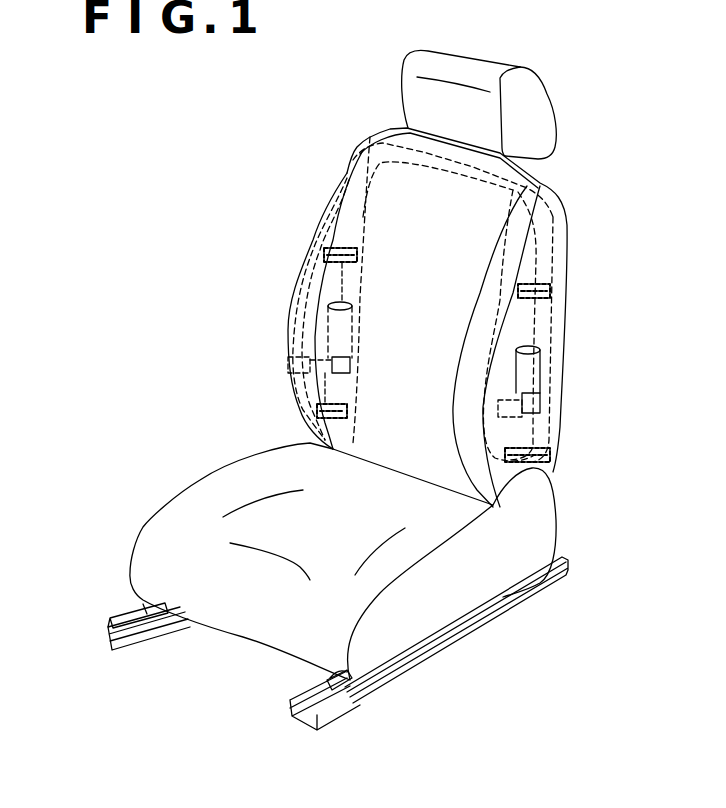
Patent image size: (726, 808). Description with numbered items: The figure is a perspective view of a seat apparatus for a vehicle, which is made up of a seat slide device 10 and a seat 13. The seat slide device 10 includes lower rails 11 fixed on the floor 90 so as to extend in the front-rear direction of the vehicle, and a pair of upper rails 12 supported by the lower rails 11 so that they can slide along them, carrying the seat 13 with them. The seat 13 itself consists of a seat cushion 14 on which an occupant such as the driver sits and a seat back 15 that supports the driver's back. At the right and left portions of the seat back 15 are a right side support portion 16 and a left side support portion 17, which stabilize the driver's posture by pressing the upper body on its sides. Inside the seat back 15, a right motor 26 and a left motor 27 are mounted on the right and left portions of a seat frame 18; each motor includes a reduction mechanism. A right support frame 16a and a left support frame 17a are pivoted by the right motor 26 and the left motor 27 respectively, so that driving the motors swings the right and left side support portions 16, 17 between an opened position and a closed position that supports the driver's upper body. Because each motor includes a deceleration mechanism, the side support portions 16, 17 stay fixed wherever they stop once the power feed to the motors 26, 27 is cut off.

The seat slide device 10 is at (137, 666).
The lower rails 11 is at (107, 633).
The upper rails 12 is at (167, 617).
The seat 13 is at (141, 337).
The seat cushion 14 is at (237, 500).
The seat back 15 is at (403, 215).
The right side support portion 16 is at (297, 287).
The right support frame 16a is at (290, 385).
The left side support portion 17 is at (470, 345).
The left support frame 17a is at (487, 434).
The seat frame 18 is at (553, 218).
The right motor 26 is at (327, 322).
The left motor 27 is at (533, 378).
The floor 90 is at (523, 689).